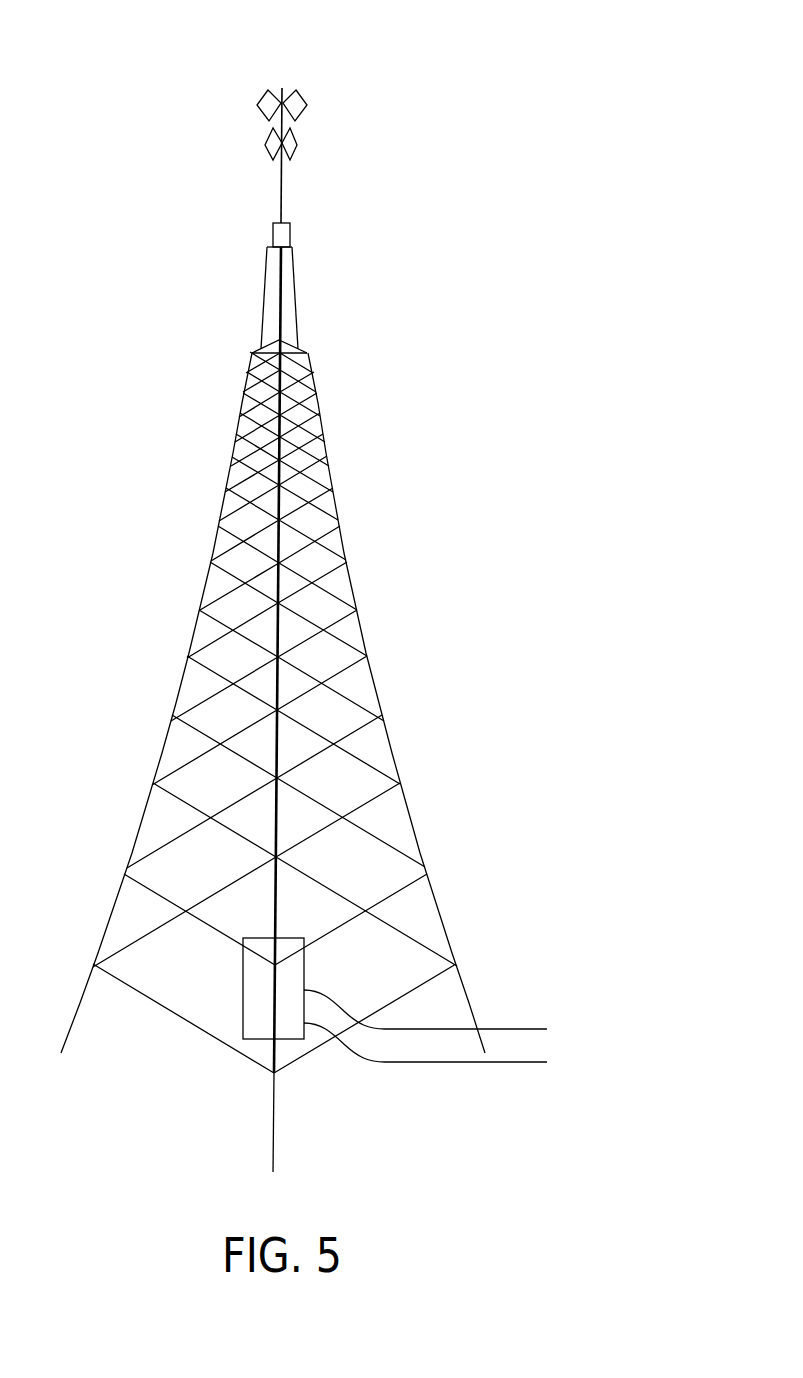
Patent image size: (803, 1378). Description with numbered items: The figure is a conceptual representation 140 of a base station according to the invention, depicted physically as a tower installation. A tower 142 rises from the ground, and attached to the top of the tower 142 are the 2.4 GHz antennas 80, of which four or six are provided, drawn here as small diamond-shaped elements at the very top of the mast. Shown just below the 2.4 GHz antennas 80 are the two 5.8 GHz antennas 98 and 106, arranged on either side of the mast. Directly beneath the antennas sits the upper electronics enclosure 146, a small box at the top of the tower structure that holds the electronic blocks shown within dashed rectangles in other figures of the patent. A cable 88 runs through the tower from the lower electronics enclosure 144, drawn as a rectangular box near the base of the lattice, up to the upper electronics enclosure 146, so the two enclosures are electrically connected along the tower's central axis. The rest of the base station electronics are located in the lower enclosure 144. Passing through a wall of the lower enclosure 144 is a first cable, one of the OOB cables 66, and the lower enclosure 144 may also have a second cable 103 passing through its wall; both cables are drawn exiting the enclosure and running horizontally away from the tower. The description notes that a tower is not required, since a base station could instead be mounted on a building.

The conceptual representation 140 is at (615, 42).
The 2.4 GHz antennas 80 is at (263, 92).
The 5.8 GHz antenna 106 is at (270, 153).
The 5.8 GHz antenna 98 is at (292, 153).
The upper electronics enclosure 146 is at (290, 235).
The tower 142 is at (337, 507).
The cable 88 is at (280, 615).
The lower electronics enclosure 144 is at (243, 988).
The second cable 103 is at (502, 1029).
The OOB cable 66 is at (500, 1063).